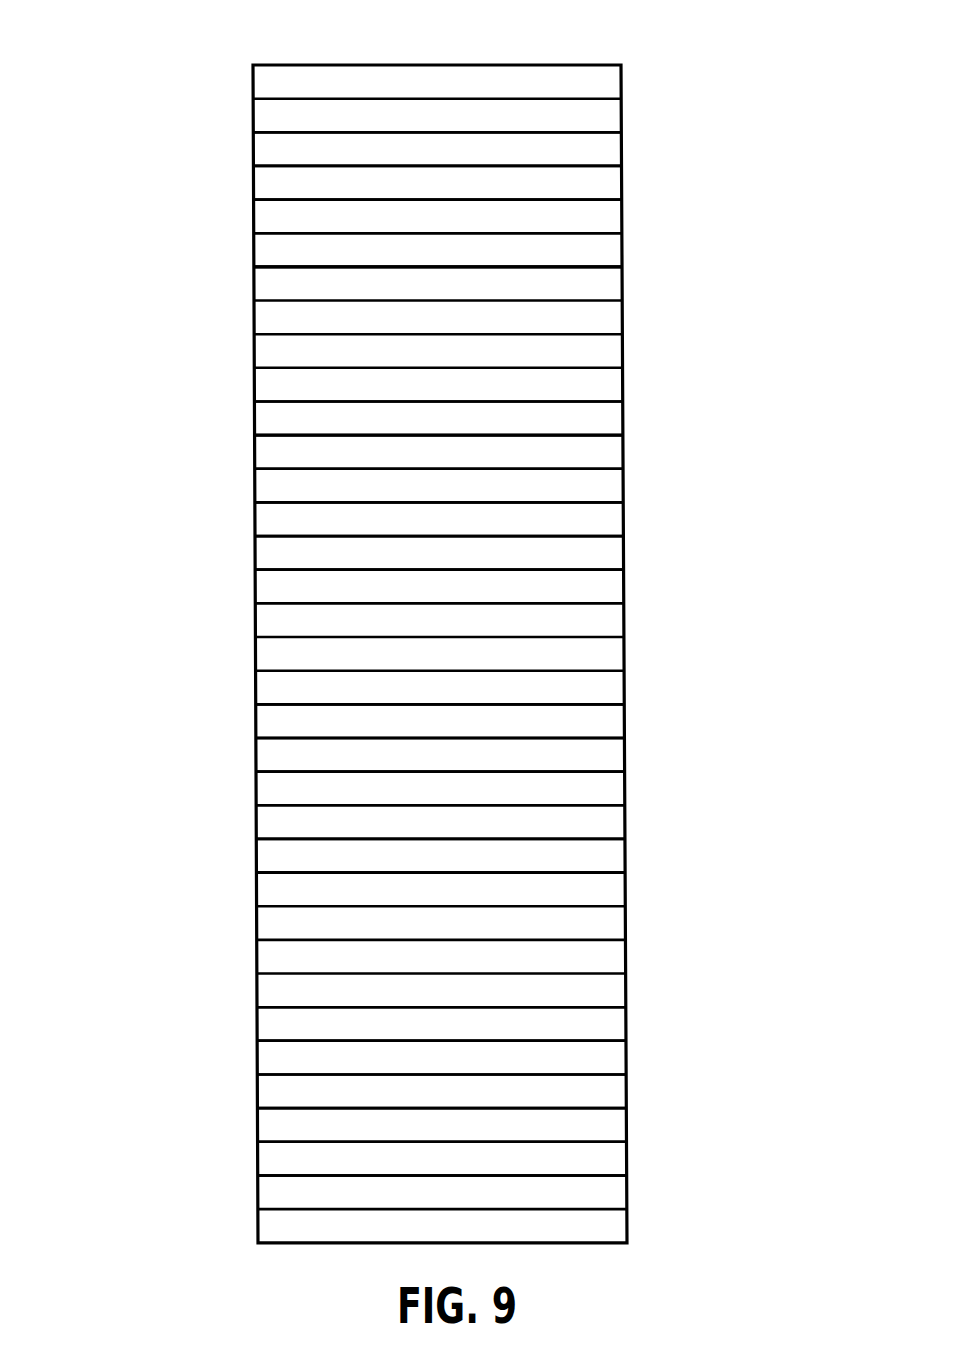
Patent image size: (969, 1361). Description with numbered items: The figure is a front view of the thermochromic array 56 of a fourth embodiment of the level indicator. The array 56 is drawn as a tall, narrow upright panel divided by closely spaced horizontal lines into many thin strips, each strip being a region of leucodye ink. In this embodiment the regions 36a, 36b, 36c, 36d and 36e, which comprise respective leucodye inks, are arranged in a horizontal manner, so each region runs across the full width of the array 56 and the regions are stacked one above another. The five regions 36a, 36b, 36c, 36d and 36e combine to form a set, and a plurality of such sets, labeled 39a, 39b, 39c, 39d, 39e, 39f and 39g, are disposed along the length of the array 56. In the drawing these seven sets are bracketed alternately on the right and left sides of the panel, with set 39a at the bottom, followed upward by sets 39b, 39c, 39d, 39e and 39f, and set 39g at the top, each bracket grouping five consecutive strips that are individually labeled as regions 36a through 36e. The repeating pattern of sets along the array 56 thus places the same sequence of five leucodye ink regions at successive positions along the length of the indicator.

The array 56 is at (604, 105).
The region 36a is at (577, 132).
The region 36b is at (577, 166).
The region 36c is at (577, 200).
The region 36d is at (577, 233).
The region 36e is at (577, 267).
The set 39a is at (730, 1175).
The set 39b is at (133, 875).
The set 39c is at (729, 882).
The set 39d is at (131, 575).
The set 39e is at (725, 423).
The set 39f is at (131, 273).
The set 39g is at (727, 118).